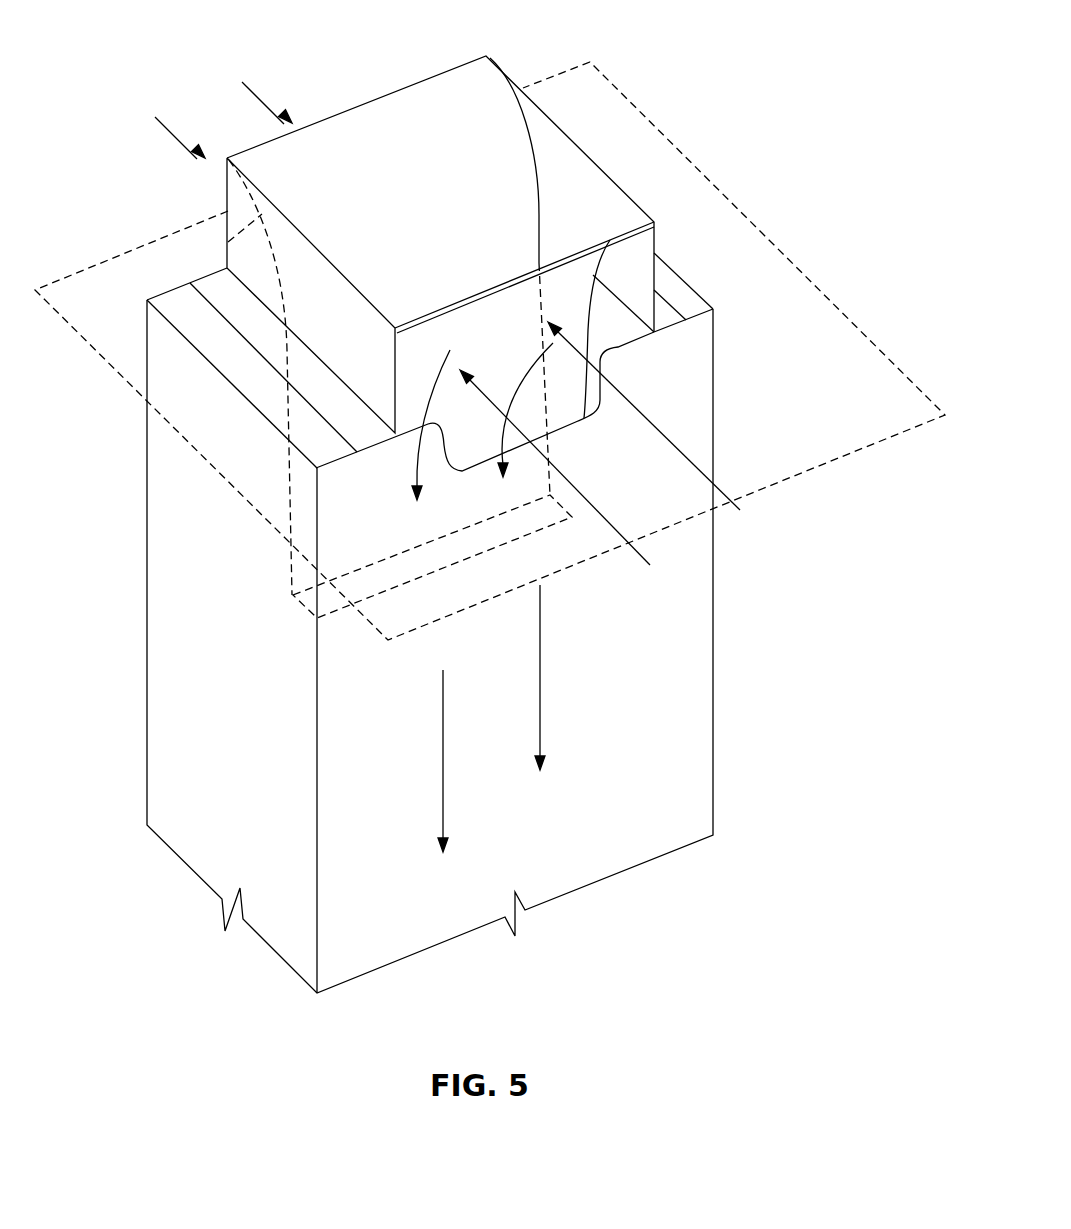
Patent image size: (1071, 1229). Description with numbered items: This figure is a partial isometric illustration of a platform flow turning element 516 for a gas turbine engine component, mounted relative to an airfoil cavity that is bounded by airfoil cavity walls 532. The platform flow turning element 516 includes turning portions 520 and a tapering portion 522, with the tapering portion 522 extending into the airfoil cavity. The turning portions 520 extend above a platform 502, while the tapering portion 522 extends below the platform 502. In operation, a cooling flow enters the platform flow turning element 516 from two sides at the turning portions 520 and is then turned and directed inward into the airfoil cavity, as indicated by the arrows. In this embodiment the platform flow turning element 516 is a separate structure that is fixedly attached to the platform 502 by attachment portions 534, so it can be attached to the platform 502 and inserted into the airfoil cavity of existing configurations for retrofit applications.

The platform 502 is at (680, 170).
The platform flow turning element 516 is at (533, 102).
The turning portions 520 is at (225, 252).
The tapering portion 522 is at (285, 563).
The airfoil cavity walls 532 is at (252, 703).
The attachment portions 534 is at (162, 305).